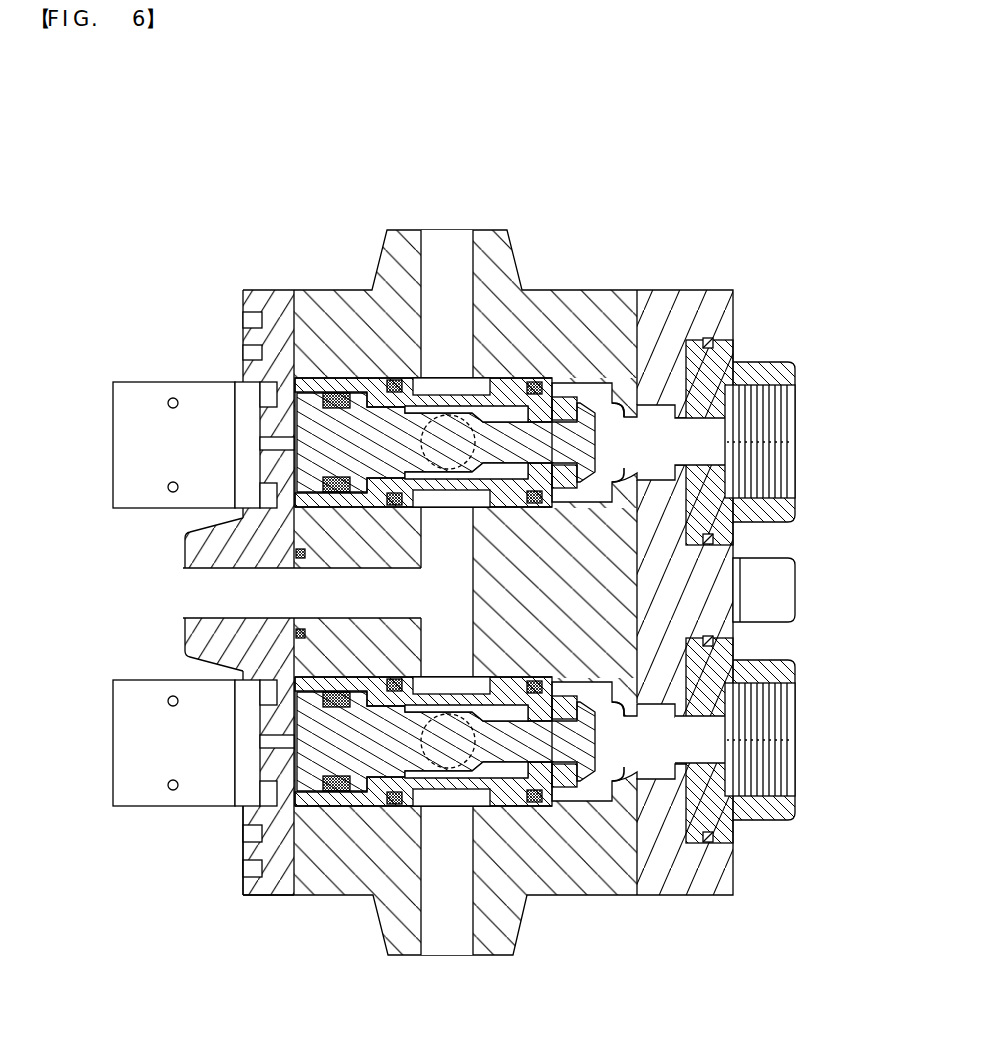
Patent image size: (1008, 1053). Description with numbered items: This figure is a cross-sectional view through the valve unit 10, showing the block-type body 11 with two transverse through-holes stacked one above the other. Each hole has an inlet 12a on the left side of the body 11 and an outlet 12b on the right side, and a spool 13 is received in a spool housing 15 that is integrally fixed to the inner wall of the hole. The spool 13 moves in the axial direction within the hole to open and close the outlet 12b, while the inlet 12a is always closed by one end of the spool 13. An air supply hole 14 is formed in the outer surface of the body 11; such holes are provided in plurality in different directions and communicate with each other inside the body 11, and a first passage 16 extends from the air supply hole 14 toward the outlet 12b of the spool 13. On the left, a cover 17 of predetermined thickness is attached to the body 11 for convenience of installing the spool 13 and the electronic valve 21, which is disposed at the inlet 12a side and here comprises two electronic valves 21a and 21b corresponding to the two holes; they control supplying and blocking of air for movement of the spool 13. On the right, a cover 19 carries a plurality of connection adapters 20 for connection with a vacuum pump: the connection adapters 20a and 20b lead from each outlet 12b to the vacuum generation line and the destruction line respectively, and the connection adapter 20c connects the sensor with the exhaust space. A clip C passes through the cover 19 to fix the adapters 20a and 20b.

The valve unit 10 is at (460, 558).
The body 11 is at (325, 270).
The inlet 12a is at (292, 383).
The outlet 12b is at (597, 392).
The spool 13 is at (385, 808).
The air supply hole 14 is at (460, 258).
The spool housing 15 is at (403, 750).
The first passage 16 is at (437, 834).
The cover 17 is at (272, 885).
The cover 19 is at (695, 897).
The connection adapter 20 is at (785, 631).
The connection adapter 20a is at (772, 362).
The connection adapter 20b is at (797, 810).
The connection adapter 20c is at (797, 590).
The electronic valve 21 is at (159, 536).
The electronic valve 21a is at (113, 447).
The electronic valve 21b is at (113, 740).
The clip C is at (634, 920).